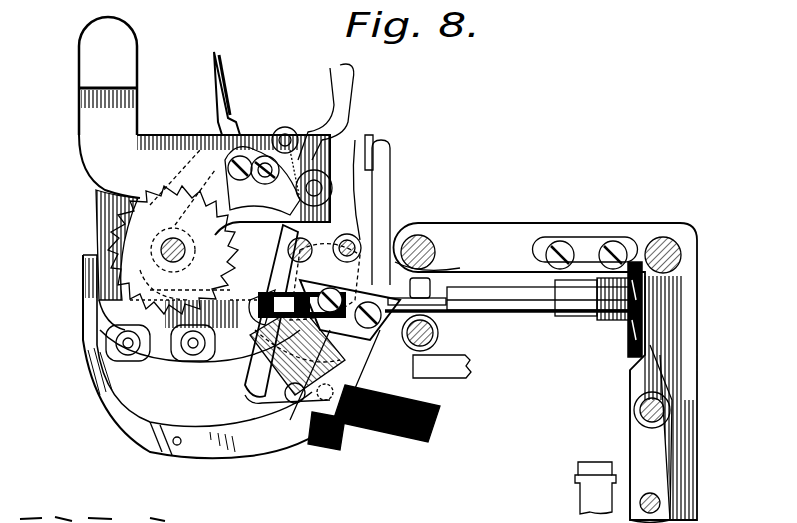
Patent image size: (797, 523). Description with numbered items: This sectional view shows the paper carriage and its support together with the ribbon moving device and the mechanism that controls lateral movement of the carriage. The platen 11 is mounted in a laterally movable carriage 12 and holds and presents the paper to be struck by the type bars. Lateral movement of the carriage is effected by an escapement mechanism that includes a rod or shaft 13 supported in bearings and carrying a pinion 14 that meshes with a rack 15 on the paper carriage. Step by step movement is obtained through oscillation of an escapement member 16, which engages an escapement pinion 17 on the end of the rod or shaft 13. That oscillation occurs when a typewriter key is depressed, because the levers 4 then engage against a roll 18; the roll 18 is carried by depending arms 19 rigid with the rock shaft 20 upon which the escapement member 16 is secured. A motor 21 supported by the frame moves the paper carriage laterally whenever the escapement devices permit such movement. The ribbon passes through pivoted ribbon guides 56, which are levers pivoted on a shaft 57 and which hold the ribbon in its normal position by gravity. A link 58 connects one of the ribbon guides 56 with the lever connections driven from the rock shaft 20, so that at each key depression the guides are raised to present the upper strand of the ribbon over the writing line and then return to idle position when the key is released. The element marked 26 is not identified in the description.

The platen 11 is at (95, 220).
The carriage 12 is at (245, 137).
The rod or shaft 13 is at (494, 306).
The pinion 14 is at (242, 340).
The rack 15 is at (345, 250).
The escapement member 16 is at (642, 376).
The escapement pinion 17 is at (627, 330).
The roll 18 is at (640, 503).
The depending arms 19 is at (640, 450).
The rock shaft 20 is at (666, 410).
The motor 21 is at (410, 428).
The arm 26 is at (436, 246).
The ribbon guides 56 is at (120, 412).
The shaft 57 is at (395, 262).
The link 58 is at (460, 372).
The levers 4 is at (585, 472).